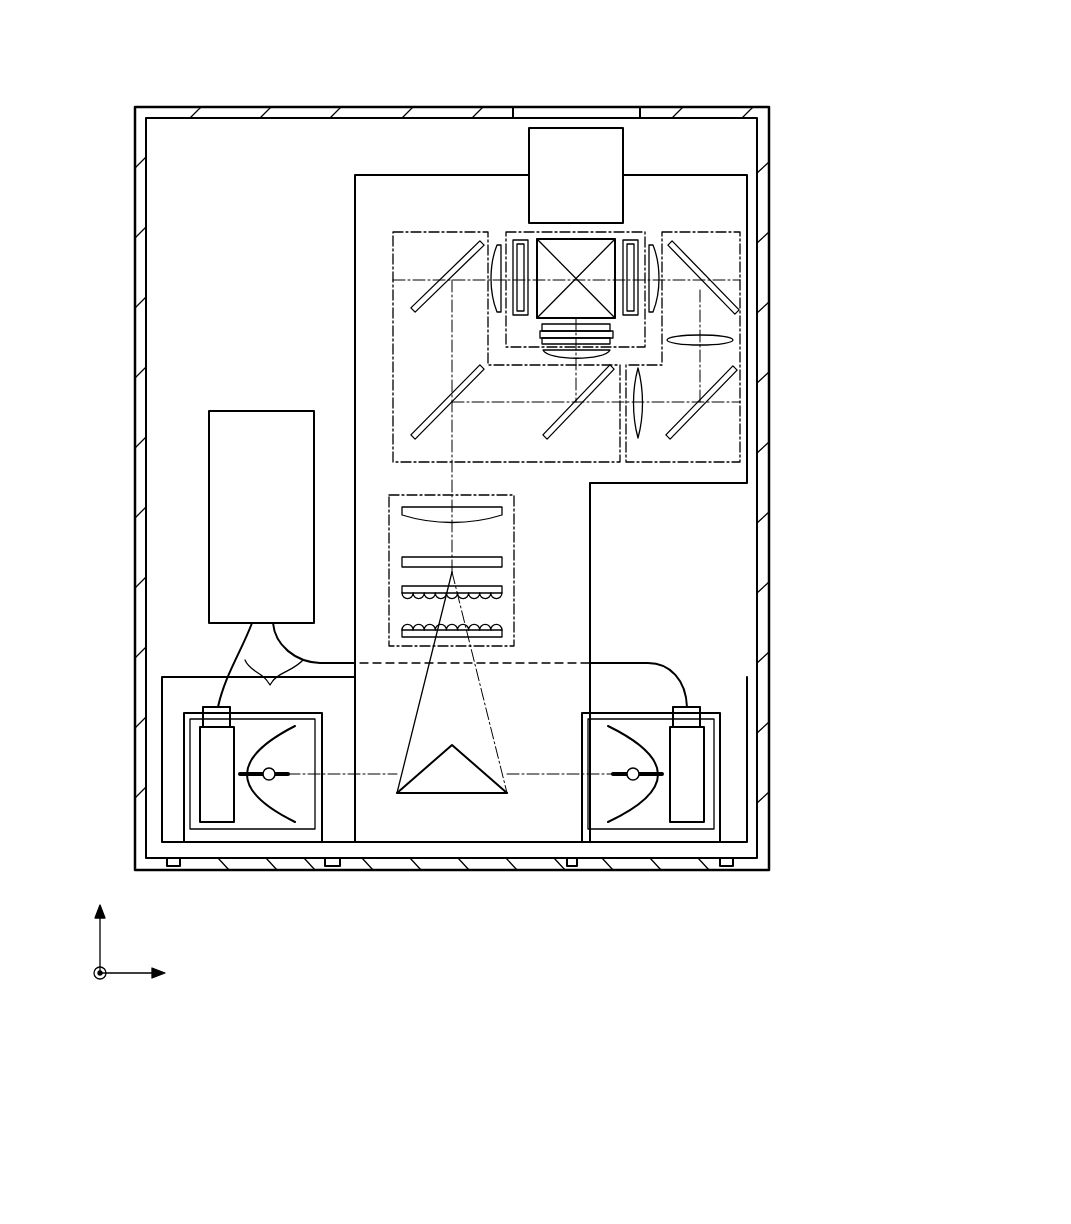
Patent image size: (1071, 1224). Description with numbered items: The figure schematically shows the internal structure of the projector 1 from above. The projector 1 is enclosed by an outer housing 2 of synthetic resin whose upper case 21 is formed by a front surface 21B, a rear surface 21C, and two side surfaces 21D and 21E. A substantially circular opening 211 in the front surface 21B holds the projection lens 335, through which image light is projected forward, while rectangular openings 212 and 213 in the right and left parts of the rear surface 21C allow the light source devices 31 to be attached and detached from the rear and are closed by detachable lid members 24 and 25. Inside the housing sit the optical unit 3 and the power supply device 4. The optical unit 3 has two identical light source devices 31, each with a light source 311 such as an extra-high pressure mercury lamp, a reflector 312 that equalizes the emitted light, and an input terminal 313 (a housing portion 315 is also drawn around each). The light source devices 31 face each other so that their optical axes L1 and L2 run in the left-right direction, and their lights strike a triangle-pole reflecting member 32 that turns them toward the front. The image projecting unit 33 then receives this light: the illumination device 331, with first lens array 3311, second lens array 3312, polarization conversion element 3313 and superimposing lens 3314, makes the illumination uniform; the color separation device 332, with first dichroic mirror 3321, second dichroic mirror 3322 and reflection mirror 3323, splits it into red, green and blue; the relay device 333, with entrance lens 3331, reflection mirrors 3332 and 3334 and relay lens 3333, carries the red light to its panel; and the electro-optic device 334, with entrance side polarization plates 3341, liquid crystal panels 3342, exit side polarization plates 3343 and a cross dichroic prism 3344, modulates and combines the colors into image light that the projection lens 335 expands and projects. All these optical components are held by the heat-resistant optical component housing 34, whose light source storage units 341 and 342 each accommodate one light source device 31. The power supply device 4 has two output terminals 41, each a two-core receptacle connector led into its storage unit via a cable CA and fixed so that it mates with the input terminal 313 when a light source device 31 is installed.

The projector 1 is at (750, 38).
The outer housing 2 is at (453, 491).
The upper case 21 is at (762, 206).
The front surface 21B is at (300, 106).
The rear surface 21C is at (437, 871).
The side surface 21D is at (770, 490).
The side surface 21E is at (135, 490).
The opening 211 is at (513, 106).
The opening 212 is at (575, 871).
The opening 213 is at (173, 871).
The lid member 24 is at (686, 871).
The lid member 25 is at (296, 871).
The optical unit 3 is at (326, 211).
The light source device 31 is at (93, 836).
The light source 311 is at (270, 782).
The reflector 312 is at (252, 790).
The input terminal 313 is at (212, 760).
The light source housing 315 is at (193, 735).
The reflecting member 32 is at (445, 796).
The image projecting unit 33 is at (554, 360).
The illumination device 331 is at (514, 500).
The first lens array 3311 is at (497, 632).
The second lens array 3312 is at (497, 590).
The polarization conversion element 3313 is at (495, 562).
The superimposing lens 3314 is at (493, 512).
The color separation device 332 is at (393, 292).
The first dichroic mirror 3321 is at (430, 418).
The second dichroic mirror 3322 is at (560, 426).
The reflection mirror 3323 is at (430, 293).
The relay device 333 is at (698, 462).
The entrance lens 3331 is at (638, 440).
The reflection mirror 3332 is at (735, 398).
The relay lens 3333 is at (735, 343).
The reflection mirror 3334 is at (735, 290).
The electro-optic device 334 is at (506, 236).
The entrance side polarization plate 3341 is at (515, 243).
The liquid crystal panel 3342 is at (520, 243).
The exit side polarization plate 3343 is at (500, 243).
The cross dichroic prism 3344 is at (576, 248).
The projection lens 335 is at (567, 140).
The optical component housing 34 is at (590, 582).
The light source storage unit 341 is at (582, 740).
The light source storage unit 342 is at (322, 740).
The power supply device 4 is at (250, 412).
The output terminal 41 is at (208, 707).
The cable CA is at (274, 686).
The optical axis L1 is at (540, 778).
The optical axis L2 is at (357, 778).